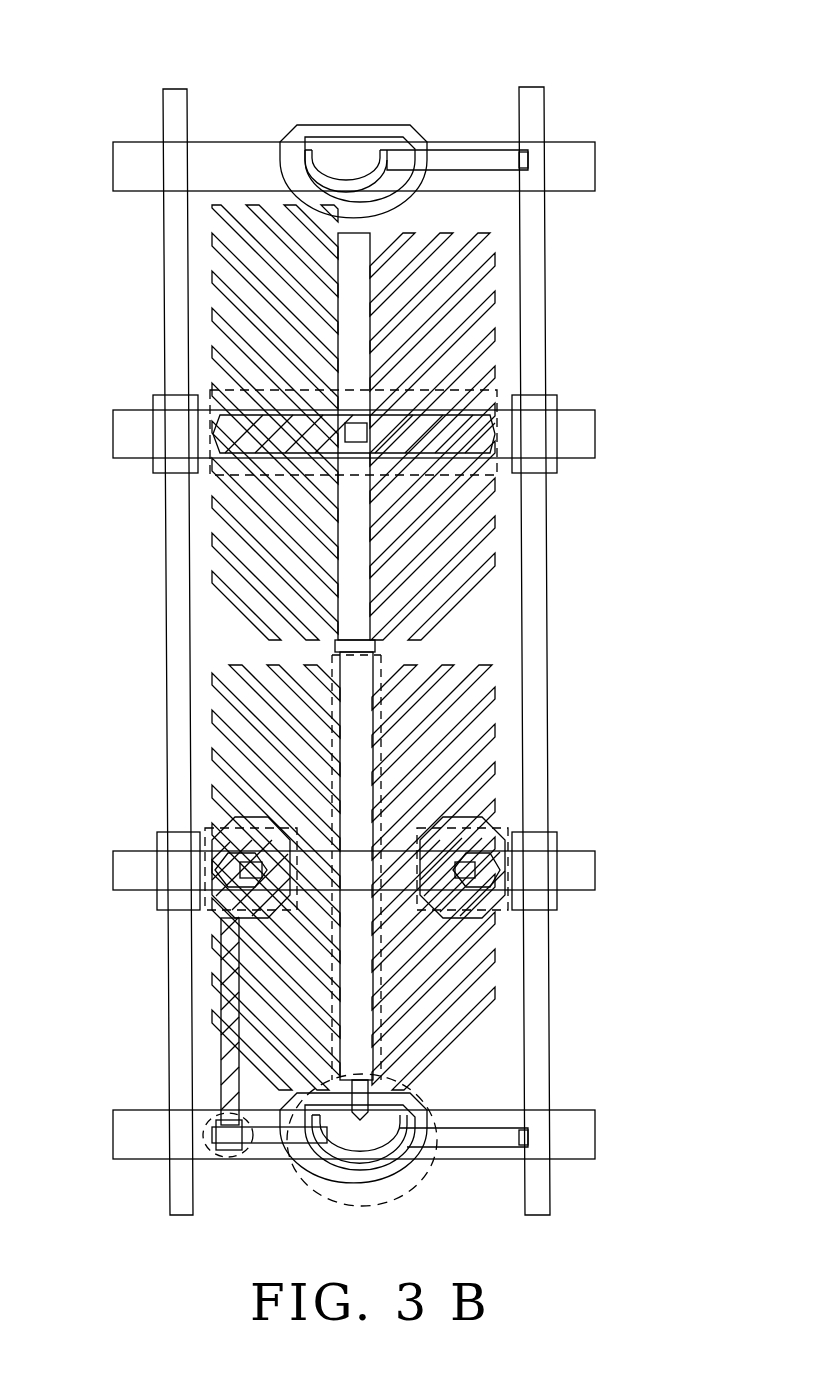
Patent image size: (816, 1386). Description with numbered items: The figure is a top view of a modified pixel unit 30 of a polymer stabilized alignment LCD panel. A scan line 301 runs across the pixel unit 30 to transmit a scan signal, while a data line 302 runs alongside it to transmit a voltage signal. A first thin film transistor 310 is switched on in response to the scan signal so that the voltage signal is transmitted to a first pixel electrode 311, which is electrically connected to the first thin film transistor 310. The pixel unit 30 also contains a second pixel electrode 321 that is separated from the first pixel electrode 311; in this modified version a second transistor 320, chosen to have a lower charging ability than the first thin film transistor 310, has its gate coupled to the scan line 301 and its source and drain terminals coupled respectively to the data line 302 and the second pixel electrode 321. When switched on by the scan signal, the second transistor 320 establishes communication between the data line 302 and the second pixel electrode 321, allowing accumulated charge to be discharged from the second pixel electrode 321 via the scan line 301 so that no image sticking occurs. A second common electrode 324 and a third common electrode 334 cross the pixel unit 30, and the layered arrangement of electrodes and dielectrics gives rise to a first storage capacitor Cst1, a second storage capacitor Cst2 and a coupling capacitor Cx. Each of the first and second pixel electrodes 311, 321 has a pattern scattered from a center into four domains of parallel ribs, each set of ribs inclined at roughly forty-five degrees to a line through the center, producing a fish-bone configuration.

The pixel unit 30 is at (648, 112).
The scan line 301 is at (128, 1136).
The data line 302 is at (538, 1065).
The first thin film transistor 310 is at (390, 1203).
The first pixel electrode 311 is at (487, 303).
The second transistor 320 is at (212, 1162).
The second pixel electrode 321 is at (485, 672).
The second common electrode 324 is at (584, 437).
The third common electrode 334 is at (588, 875).
The first storage capacitor Cst1 is at (448, 377).
The second storage capacitor Cst2 is at (205, 830).
The coupling capacitor Cx is at (382, 655).